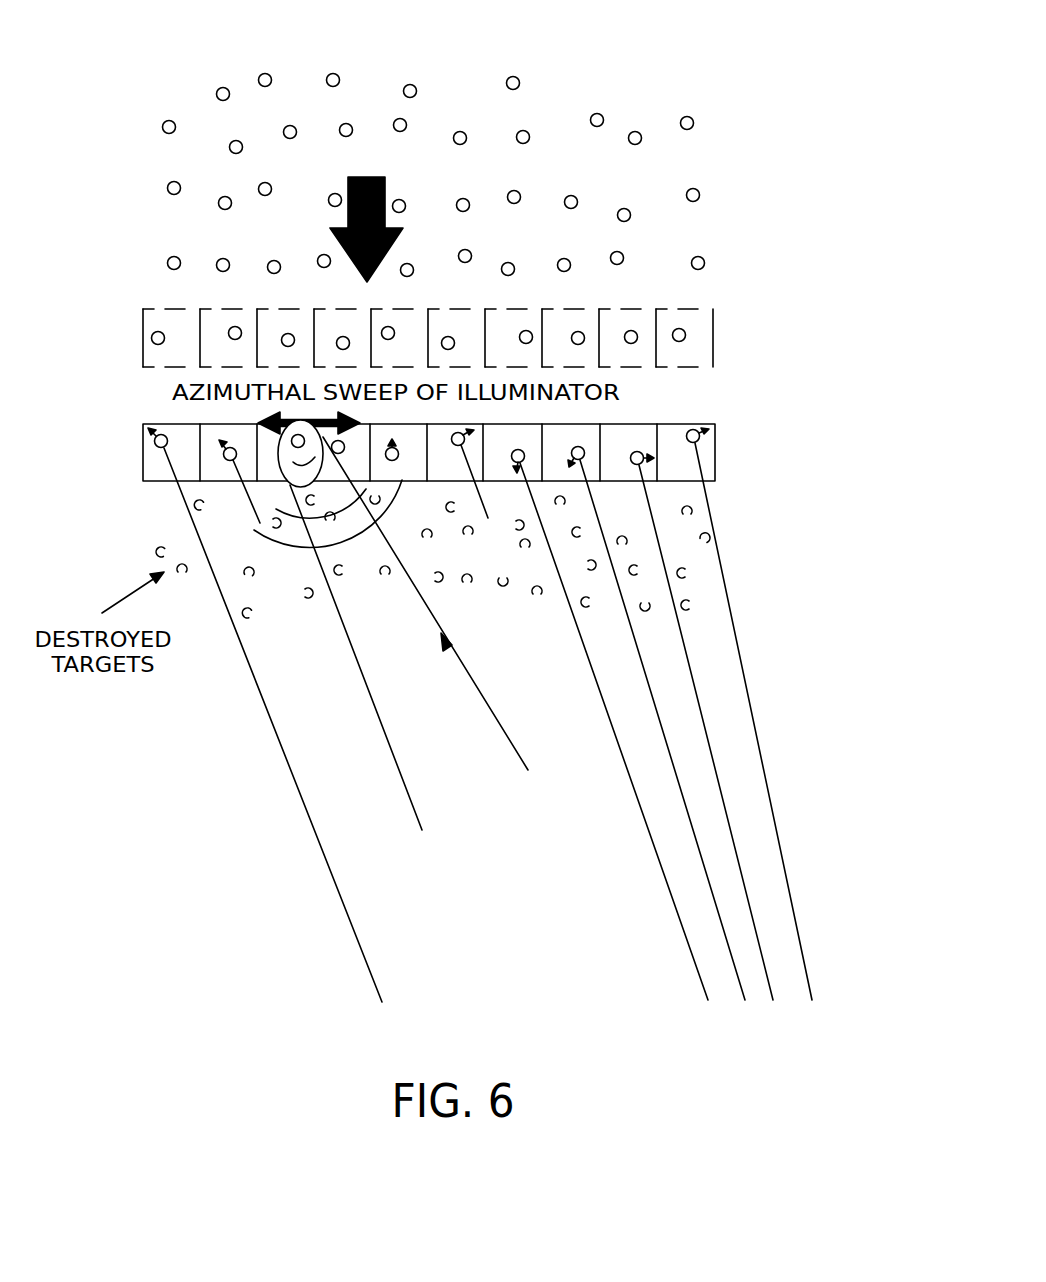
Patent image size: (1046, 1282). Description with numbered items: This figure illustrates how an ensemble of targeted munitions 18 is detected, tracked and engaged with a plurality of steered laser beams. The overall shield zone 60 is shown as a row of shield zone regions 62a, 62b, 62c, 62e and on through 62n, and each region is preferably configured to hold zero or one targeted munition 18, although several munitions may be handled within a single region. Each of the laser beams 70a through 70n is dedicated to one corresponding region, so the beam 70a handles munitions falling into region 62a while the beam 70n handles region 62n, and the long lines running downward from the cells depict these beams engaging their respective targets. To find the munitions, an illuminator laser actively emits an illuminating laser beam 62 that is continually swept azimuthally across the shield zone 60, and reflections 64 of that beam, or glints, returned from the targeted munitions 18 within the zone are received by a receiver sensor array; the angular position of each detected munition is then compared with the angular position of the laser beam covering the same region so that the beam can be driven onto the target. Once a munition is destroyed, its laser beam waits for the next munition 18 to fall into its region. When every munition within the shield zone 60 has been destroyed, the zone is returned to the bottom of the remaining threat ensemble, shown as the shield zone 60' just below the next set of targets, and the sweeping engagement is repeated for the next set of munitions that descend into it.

The targeted munition 18 is at (410, 84).
The shield zone at bottom of remaining threat ensemble 60' is at (517, 314).
The shield zone 60 is at (525, 463).
The shield zone region 62a is at (162, 483).
The shield zone region 62b is at (225, 483).
The shield zone region 62c is at (284, 487).
The shield zone region 62e is at (418, 483).
The shield zone region 62n is at (688, 482).
The illuminating laser beam 62 is at (477, 685).
The reflections of the illuminator laser beam 64 is at (360, 527).
The laser beam 70a is at (282, 757).
The laser beam 70n is at (737, 647).